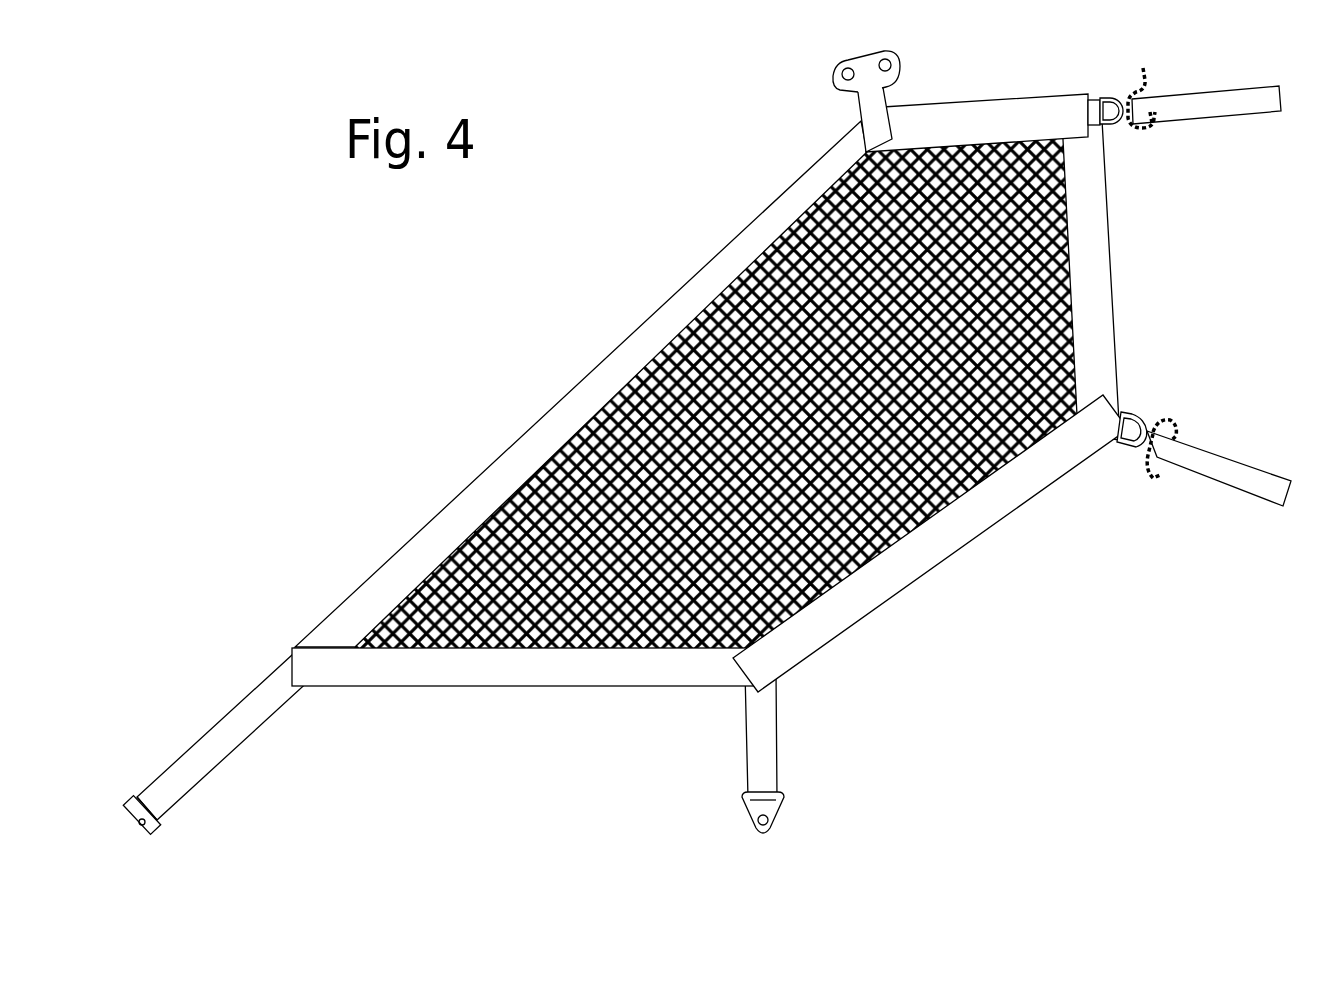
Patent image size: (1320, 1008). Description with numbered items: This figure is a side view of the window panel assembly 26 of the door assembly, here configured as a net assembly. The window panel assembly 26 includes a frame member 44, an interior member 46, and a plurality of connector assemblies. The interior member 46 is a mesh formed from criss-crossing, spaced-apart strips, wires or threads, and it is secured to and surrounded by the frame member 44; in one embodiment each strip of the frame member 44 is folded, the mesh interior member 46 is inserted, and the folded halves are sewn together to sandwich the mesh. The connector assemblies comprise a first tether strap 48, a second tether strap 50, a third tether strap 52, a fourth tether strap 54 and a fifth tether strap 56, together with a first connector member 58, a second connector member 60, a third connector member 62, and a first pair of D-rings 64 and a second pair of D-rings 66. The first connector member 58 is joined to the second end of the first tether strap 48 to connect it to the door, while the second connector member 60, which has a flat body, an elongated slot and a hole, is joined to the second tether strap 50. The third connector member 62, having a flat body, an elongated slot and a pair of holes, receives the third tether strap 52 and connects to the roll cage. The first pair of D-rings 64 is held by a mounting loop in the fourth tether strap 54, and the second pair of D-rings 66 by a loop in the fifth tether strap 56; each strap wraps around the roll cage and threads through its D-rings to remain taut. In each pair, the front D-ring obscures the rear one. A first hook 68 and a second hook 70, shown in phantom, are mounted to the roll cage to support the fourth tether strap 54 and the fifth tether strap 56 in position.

The window panel assembly 26 is at (461, 353).
The frame member 44 is at (997, 102).
The interior member 46 is at (735, 300).
The first tether strap 48 is at (192, 748).
The second tether strap 50 is at (777, 745).
The third tether strap 52 is at (857, 107).
The fourth tether strap 54 is at (1228, 118).
The fifth tether strap 56 is at (1232, 488).
The first connector member 58 is at (157, 838).
The second connector member 60 is at (785, 808).
The third connector member 62 is at (837, 67).
The first pair of D-rings 64 is at (1104, 98).
The second pair of D-rings 66 is at (1136, 412).
The first hook 68 is at (1147, 130).
The second hook 70 is at (1152, 485).